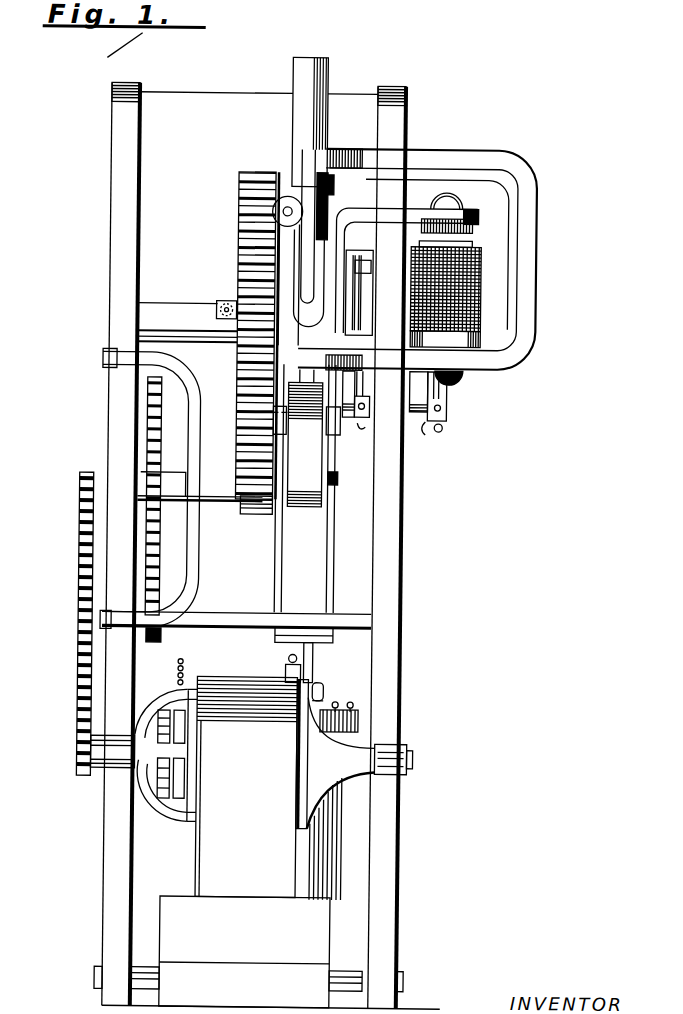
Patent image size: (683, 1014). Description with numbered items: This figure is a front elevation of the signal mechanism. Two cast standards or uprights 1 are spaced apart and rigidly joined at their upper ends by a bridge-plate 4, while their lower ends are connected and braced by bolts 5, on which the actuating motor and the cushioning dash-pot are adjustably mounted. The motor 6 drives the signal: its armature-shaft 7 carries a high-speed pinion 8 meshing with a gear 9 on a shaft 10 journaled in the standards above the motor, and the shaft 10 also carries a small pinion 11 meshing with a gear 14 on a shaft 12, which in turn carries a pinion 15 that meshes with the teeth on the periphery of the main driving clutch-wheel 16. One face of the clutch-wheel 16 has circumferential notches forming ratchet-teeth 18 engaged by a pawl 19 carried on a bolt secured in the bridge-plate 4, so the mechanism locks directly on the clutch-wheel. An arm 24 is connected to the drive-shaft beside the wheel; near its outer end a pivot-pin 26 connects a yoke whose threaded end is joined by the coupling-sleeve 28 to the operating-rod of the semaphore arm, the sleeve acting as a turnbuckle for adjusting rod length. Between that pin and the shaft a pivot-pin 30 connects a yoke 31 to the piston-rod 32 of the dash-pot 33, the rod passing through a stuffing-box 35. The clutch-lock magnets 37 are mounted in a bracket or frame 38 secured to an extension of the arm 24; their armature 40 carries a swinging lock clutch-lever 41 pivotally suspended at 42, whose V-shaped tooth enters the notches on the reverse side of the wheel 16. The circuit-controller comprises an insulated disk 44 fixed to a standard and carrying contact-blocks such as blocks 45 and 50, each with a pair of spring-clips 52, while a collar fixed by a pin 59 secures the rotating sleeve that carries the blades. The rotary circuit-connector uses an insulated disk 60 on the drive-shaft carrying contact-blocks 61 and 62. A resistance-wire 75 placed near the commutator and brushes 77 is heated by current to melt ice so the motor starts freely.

The standards or uprights 1 is at (402, 553).
The bridge-plate 4 is at (148, 544).
The bolts 5 is at (353, 977).
The motor 6 is at (246, 786).
The armature-shaft 7 is at (160, 760).
The high-speed pinion 8 is at (77, 767).
The gear 9 is at (79, 618).
The shaft 10 is at (243, 633).
The small pinion 11 is at (163, 656).
The shaft 12 is at (169, 488).
The gear 14 is at (160, 566).
The pinion 15 is at (258, 516).
The main driving clutch-wheel 16 is at (241, 457).
The ratchet-teeth 18 is at (238, 431).
The pawl 19 is at (221, 302).
The arm 24 is at (305, 437).
The pivot-pin 26 is at (338, 486).
The coupling-sleeve 28 is at (305, 119).
The pivot-pin 30 is at (240, 407).
The yoke 31 is at (327, 555).
The piston-rod 32 is at (316, 661).
The dash-pot 33 is at (360, 835).
The stuffing-box 35 is at (313, 697).
The clutch-lock magnets 37 is at (486, 265).
The bracket or frame 38 is at (537, 305).
The armature 40 is at (495, 225).
The lock clutch-lever 41 is at (337, 247).
The pivot 42 is at (283, 203).
The insulated disk 44 is at (439, 442).
The contact-block 45 is at (304, 288).
The contact-block 50 is at (450, 413).
The spring-clips 52 is at (440, 385).
The pin 59 is at (322, 150).
The insulated disk 60 is at (343, 417).
The contact-block 61 is at (372, 252).
The contact-block 62 is at (358, 427).
The resistance-wire 75 is at (177, 817).
The brushes 77 is at (185, 708).